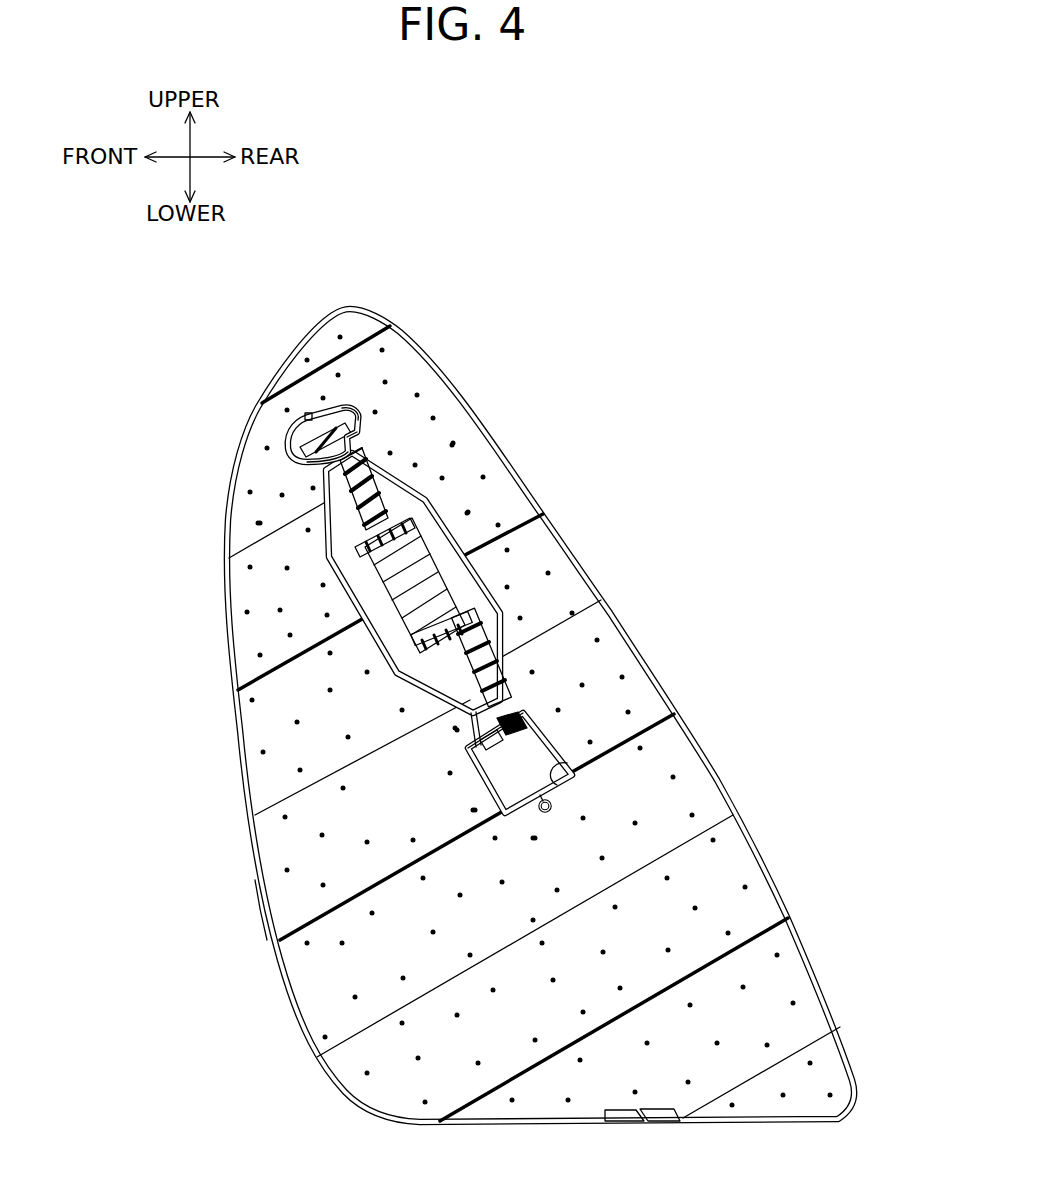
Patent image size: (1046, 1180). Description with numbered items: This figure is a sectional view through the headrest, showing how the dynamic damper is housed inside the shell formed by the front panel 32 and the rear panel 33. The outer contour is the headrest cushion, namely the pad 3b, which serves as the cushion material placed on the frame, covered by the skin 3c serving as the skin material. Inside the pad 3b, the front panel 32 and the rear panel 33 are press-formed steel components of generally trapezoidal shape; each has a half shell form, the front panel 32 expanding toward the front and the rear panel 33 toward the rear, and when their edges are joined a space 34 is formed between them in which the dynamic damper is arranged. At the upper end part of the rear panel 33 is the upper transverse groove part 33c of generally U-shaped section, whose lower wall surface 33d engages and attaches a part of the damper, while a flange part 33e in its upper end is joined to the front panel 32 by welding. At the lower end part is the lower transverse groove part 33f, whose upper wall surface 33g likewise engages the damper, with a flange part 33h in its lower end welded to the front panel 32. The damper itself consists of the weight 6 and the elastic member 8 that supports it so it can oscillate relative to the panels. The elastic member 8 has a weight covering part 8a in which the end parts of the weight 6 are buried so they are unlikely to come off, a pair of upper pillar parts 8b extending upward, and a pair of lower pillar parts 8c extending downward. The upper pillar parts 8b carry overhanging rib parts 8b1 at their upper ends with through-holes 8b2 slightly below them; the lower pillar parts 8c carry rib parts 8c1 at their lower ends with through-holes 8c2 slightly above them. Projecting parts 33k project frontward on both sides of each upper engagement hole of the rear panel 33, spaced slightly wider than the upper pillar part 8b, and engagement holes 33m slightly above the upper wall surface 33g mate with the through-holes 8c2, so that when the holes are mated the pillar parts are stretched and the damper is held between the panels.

The pad 3b is at (322, 978).
The skin 3c is at (262, 908).
The weight 6 is at (432, 505).
The elastic member 8 is at (450, 606).
The weight covering part 8a is at (360, 548).
The upper pillar parts 8b is at (380, 472).
The rib parts 8b1 is at (300, 438).
The through-holes 8b2 is at (330, 468).
The lower pillar parts 8c is at (500, 648).
The rib parts 8c1 is at (545, 733).
The through-holes 8c2 is at (490, 765).
The front panel 32 is at (395, 655).
The rear panel 33 is at (553, 534).
The upper transverse groove part 33c is at (355, 407).
The lower wall surface 33d is at (363, 433).
The flange part 33e is at (310, 416).
The lower transverse groove part 33f is at (563, 788).
The upper wall surface 33g is at (522, 708).
The flange part 33h is at (548, 804).
The projecting parts 33k is at (358, 447).
The engagement holes 33m is at (472, 725).
The space 34 is at (370, 601).